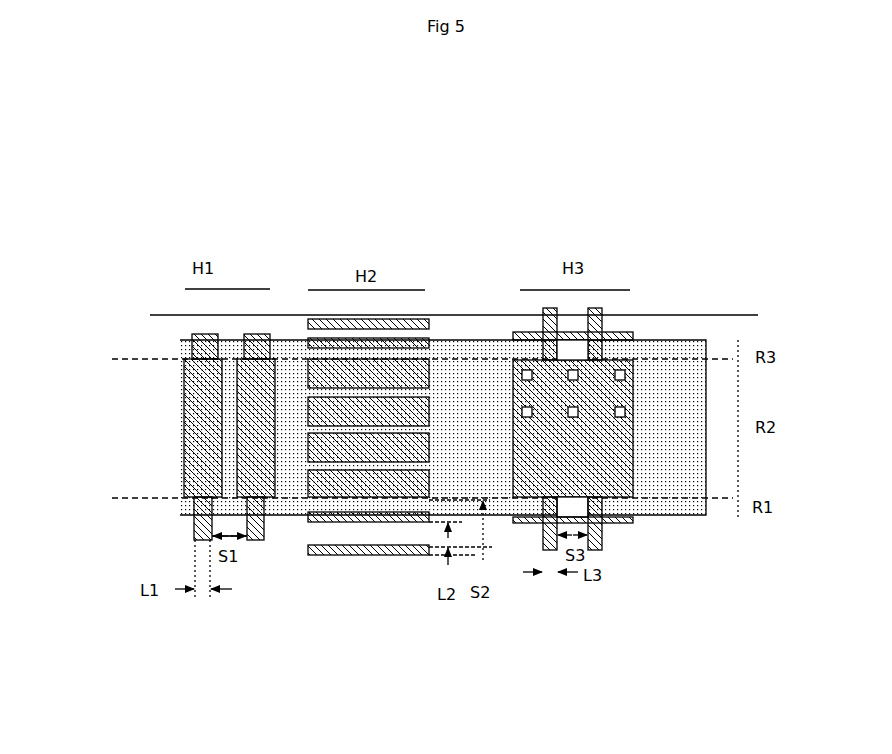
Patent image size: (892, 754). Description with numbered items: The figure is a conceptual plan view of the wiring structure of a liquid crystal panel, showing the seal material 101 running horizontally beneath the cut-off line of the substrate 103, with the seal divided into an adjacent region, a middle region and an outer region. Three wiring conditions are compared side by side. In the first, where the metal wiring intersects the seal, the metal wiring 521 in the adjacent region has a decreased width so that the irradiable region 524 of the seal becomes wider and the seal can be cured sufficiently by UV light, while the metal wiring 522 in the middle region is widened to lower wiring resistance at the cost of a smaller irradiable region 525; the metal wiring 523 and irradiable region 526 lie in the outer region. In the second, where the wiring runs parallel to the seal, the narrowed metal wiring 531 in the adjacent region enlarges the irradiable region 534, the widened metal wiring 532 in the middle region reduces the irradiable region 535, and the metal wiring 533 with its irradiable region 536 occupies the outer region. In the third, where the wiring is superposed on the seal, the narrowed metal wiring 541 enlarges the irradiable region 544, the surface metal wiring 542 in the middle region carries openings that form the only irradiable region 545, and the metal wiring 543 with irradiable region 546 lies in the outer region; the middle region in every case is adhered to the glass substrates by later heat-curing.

The seal material 101 is at (690, 420).
The cut-off line of the substrate 103 is at (690, 315).
The metal wiring in the adjacent region 521 is at (200, 540).
The metal wiring in the middle region 522 is at (184, 440).
The metal wiring in the outer region 523 is at (192, 340).
The region of the seal material in the adjacent region irradiable by UV light 524 is at (194, 515).
The region of the seal material in the middle region irradiable by UV light 525 is at (231, 390).
The region of the seal material in the outer region irradiable by UV light 526 is at (184, 358).
The metal wiring in the adjacent region 531 is at (345, 555).
The metal wiring in the middle region 532 is at (345, 500).
The metal wiring in the outer region 533 is at (330, 319).
The region of the seal material in the adjacent region irradiable by UV light 534 is at (312, 522).
The region of the seal material in the middle region irradiable by UV light 535 is at (429, 390).
The region of the seal material in the outer region irradiable by UV light 536 is at (378, 338).
The metal wiring in the adjacent region 541 is at (602, 550).
The metal wiring in the middle region 542 is at (633, 425).
The metal wiring in the outer region 543 is at (572, 340).
The region of the seal material in the adjacent region irradiable by UV light 544 is at (543, 550).
The region of the seal material in the middle region irradiable by UV light 545 is at (633, 440).
The region of the seal material in the outer region irradiable by UV light 546 is at (633, 340).